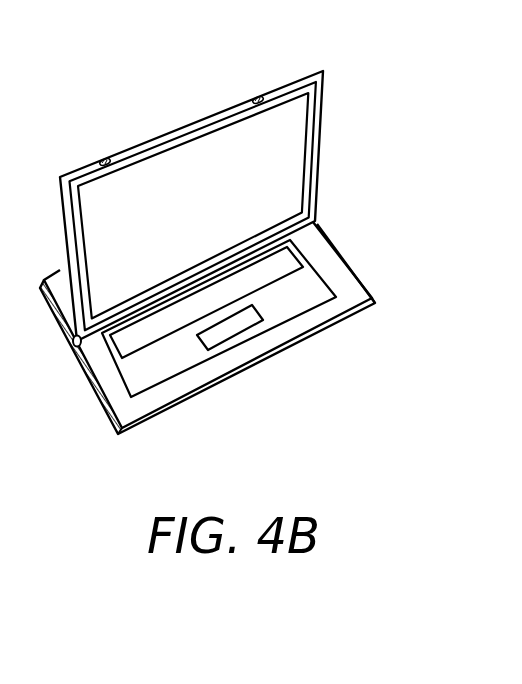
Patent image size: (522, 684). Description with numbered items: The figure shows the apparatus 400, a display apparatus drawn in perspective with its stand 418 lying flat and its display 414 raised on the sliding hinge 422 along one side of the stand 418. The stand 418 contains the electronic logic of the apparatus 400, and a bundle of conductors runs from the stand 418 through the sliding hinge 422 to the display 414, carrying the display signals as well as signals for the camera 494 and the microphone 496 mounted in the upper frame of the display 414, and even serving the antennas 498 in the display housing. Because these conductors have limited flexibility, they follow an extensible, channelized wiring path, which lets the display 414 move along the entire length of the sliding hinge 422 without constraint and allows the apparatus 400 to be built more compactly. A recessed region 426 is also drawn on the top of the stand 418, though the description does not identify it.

The apparatus 400 is at (203, 249).
The display 414 is at (291, 143).
The stand 418 is at (175, 405).
The sliding hinge 422 is at (57, 312).
The keyboard / input surface 426 is at (300, 290).
The camera 494 is at (105, 158).
The microphone 496 is at (259, 95).
The antennas 498 is at (77, 213).